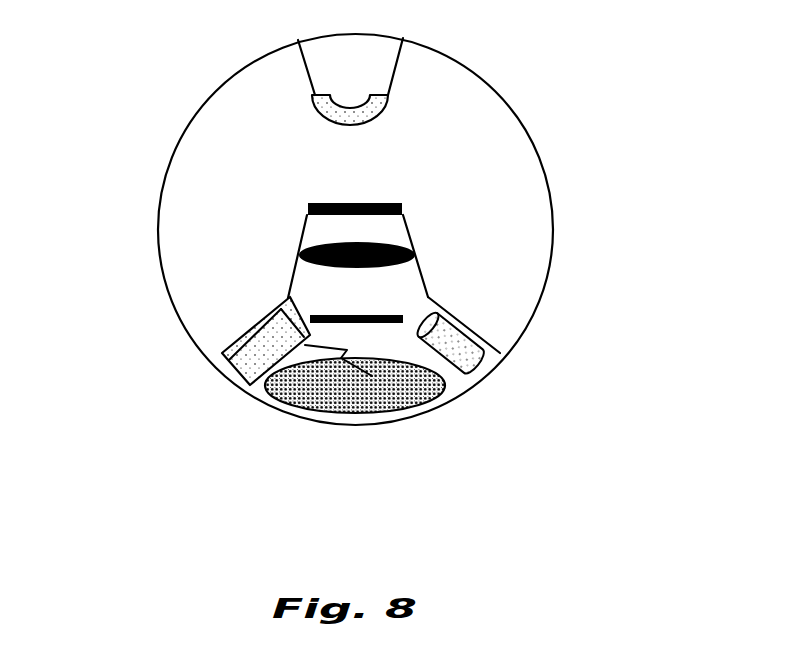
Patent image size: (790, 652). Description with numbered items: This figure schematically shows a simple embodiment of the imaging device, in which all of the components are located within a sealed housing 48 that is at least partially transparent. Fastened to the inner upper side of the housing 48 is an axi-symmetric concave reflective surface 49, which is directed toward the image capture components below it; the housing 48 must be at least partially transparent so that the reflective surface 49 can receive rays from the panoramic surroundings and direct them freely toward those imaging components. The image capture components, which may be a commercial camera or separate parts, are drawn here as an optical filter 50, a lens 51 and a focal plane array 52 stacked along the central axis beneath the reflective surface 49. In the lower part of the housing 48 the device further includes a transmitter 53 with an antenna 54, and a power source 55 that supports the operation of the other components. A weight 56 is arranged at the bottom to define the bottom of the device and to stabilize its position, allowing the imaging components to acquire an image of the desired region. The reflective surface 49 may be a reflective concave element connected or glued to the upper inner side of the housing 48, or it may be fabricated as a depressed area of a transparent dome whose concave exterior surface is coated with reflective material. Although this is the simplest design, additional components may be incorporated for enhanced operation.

The sealed housing 48 is at (552, 202).
The concave reflective surface 49 is at (390, 105).
The optical filter 50 is at (307, 210).
The lens 51 is at (300, 257).
The focal plane array 52 is at (355, 316).
The transmitter 53 is at (255, 352).
The antenna 54 is at (282, 398).
The power source 55 is at (465, 353).
The weight 56 is at (405, 405).